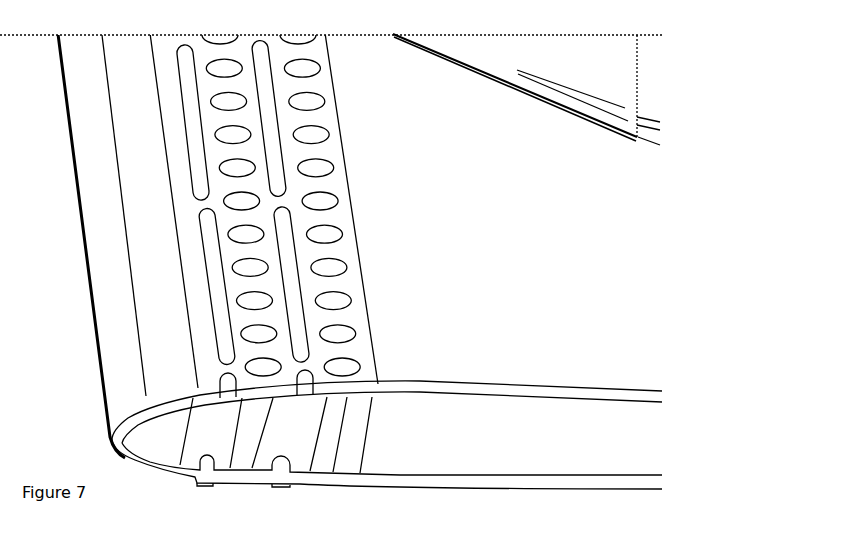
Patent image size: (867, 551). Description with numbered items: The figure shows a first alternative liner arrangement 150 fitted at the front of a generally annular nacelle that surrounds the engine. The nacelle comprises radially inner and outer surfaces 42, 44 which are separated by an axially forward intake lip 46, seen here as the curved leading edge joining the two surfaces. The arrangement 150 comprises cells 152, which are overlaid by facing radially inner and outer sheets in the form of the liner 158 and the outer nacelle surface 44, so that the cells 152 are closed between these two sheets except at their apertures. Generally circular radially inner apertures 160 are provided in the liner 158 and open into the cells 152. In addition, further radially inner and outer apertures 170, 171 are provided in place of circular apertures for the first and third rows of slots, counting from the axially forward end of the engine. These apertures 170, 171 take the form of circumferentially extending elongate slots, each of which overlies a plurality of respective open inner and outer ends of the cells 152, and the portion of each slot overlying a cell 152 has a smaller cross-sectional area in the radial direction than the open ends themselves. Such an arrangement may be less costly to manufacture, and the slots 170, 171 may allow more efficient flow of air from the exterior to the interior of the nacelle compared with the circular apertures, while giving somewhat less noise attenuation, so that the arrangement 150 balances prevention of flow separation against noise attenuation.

The radially inner surface 42 is at (620, 389).
The radially outer surface 44 is at (630, 490).
The intake lip 46 is at (76, 180).
The first alternative liner arrangement 150 is at (360, 207).
The cells 152 is at (333, 188).
The liner 158 is at (353, 228).
The radially inner apertures 160 is at (352, 300).
The radially inner apertures (slots) 170 is at (223, 288).
The radially outer apertures (slots) 171 is at (285, 474).